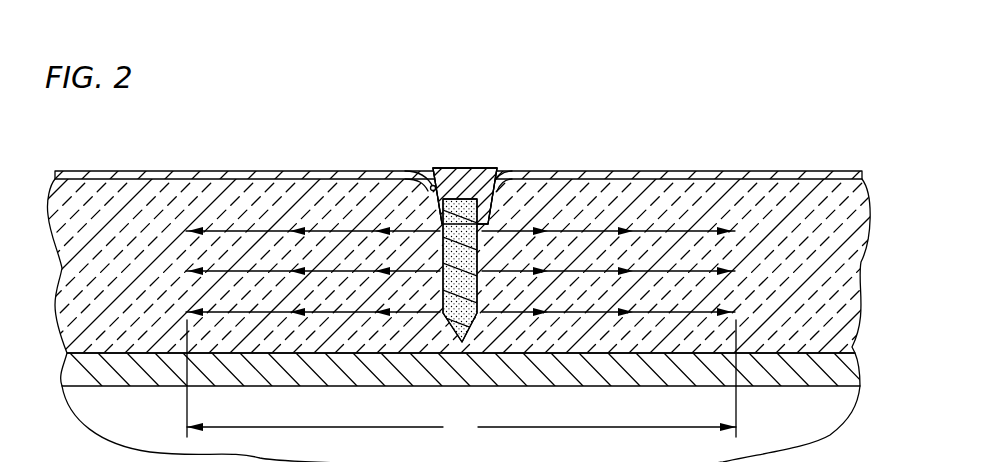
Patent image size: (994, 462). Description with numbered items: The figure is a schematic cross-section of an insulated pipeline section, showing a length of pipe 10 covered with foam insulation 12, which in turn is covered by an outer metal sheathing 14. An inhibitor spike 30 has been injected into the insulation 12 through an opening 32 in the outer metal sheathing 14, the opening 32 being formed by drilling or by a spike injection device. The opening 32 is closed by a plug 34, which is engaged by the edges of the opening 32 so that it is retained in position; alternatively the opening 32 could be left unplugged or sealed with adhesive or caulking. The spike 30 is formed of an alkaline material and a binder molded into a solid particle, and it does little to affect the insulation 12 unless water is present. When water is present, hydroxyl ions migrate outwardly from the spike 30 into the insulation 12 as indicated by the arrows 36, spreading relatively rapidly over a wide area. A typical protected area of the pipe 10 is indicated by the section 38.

The pipe 10 is at (112, 380).
The insulation 12 is at (828, 278).
The outer metal sheathing 14 is at (243, 169).
The spike 30 is at (478, 250).
The opening 32 is at (503, 160).
The plug 34 is at (459, 167).
The arrows 36 is at (337, 229).
The section 38 is at (461, 380).